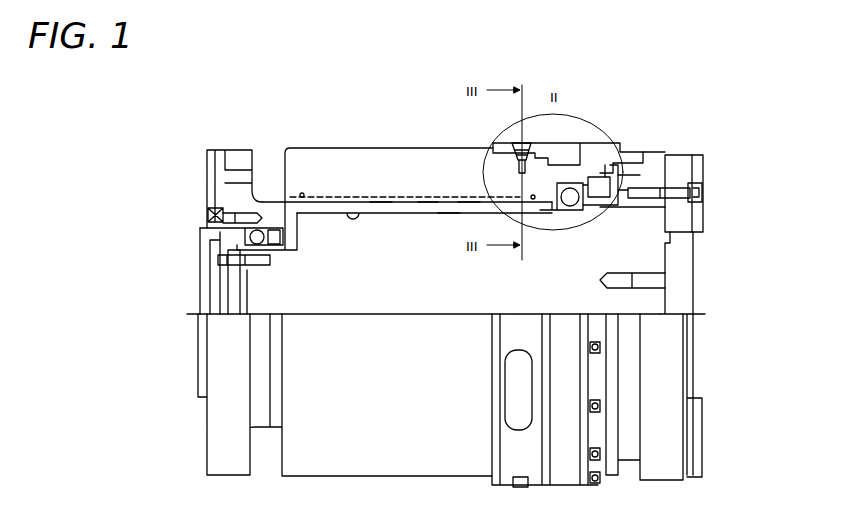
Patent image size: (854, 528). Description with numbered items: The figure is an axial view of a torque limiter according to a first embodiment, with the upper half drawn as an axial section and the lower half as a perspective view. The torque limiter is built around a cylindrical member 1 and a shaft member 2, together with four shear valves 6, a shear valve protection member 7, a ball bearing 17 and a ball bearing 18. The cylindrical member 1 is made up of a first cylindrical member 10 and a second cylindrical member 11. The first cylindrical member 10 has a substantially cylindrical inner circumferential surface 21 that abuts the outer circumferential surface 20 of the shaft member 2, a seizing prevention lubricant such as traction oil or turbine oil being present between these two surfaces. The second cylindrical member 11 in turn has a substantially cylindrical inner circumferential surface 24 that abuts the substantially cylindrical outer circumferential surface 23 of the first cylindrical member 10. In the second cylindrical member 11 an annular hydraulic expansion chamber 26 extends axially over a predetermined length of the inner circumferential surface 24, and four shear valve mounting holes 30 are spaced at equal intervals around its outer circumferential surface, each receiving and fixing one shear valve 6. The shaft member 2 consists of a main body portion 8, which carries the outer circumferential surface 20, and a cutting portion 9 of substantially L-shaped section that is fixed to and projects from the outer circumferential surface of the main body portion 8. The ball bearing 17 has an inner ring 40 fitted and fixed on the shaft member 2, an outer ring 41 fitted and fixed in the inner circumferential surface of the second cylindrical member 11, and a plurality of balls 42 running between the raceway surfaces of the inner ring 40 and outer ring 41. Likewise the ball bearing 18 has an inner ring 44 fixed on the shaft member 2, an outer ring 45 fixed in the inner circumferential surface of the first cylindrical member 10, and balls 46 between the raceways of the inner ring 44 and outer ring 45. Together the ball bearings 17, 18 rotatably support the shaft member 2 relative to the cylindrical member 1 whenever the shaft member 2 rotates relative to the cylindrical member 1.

The cylindrical member 1 is at (400, 163).
The shaft member 2 is at (267, 288).
The shear valve 6 is at (520, 143).
The shear valve protection member 7 is at (525, 452).
The main body portion 8 is at (590, 245).
The cutting portion 9 is at (600, 160).
The first cylindrical member 10 is at (323, 208).
The second cylindrical member 11 is at (353, 157).
The ball bearing 17 is at (576, 173).
The ball bearing 18 is at (268, 210).
The outer circumferential surface 20 is at (448, 212).
The inner circumferential surface 21 is at (380, 200).
The outer circumferential surface 23 is at (428, 202).
The inner circumferential surface 24 is at (355, 207).
The hydraulic expansion chamber 26 is at (467, 200).
The shear valve mounting hole 30 is at (540, 143).
The inner ring 40 is at (613, 207).
The outer ring 41 is at (700, 153).
The balls 42 is at (700, 173).
The inner ring 44 is at (240, 240).
The outer ring 45 is at (245, 218).
The balls 46 is at (205, 228).